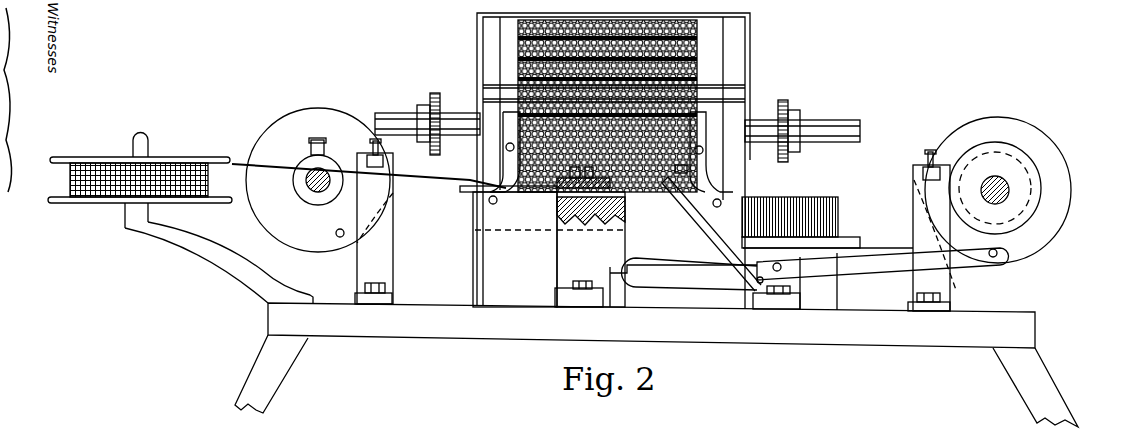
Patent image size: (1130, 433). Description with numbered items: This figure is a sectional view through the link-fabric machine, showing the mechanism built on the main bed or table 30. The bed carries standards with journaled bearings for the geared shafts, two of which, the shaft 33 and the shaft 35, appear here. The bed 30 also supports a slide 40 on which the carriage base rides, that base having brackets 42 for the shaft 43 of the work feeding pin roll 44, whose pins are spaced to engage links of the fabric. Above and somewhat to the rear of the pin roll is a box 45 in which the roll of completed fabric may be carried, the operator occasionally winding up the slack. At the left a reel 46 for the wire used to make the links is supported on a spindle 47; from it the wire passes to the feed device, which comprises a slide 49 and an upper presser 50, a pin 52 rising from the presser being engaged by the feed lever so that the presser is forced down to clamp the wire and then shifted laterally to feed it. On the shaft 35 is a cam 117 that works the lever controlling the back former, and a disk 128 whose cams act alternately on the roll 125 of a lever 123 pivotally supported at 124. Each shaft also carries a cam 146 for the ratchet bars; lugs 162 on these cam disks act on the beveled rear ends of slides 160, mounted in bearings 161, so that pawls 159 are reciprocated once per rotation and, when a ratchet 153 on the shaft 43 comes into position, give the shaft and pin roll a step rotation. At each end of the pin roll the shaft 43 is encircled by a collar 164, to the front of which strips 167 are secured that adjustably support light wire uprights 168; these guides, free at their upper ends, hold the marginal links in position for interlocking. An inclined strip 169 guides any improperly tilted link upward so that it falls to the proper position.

The main bed or table 30 is at (937, 328).
The shaft 33 is at (325, 172).
The shaft 35 is at (997, 190).
The slide 40 is at (822, 217).
The brackets 42 is at (490, 157).
The shaft 43 is at (845, 122).
The work feeding pin roll 44 is at (705, 118).
The box 45 is at (738, 46).
The reel 46 is at (107, 194).
The spindle 47 is at (146, 137).
The slide 49 is at (575, 197).
The presser 50 is at (591, 192).
The pin 52 is at (583, 192).
The cam 117 is at (1032, 204).
The lever 123 is at (955, 278).
The pivot 124 is at (781, 268).
The roll 125 is at (1010, 254).
The disk 128 is at (1035, 215).
The cam 146 is at (292, 130).
The ratchet toothed peripheries 153 is at (436, 93).
The pawls 159 is at (385, 167).
The slides 160 is at (387, 170).
The bearings 161 is at (380, 238).
The lugs 162 is at (337, 240).
The collar 164 is at (507, 128).
The strips 167 is at (497, 185).
The uprights 168 is at (547, 188).
The inclined strip 169 is at (730, 240).